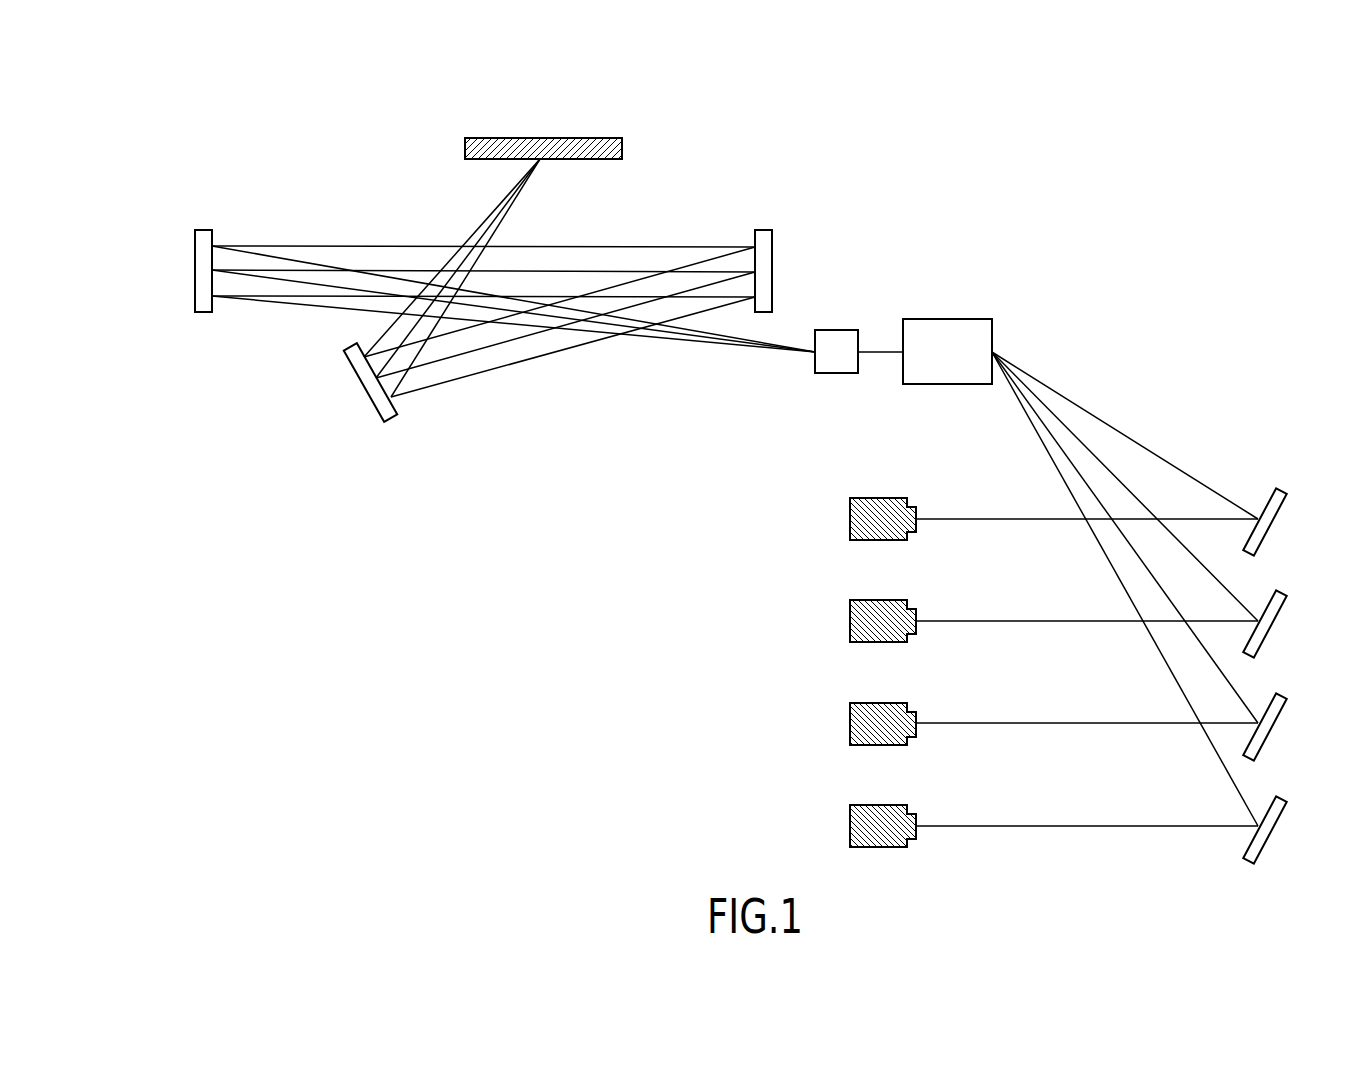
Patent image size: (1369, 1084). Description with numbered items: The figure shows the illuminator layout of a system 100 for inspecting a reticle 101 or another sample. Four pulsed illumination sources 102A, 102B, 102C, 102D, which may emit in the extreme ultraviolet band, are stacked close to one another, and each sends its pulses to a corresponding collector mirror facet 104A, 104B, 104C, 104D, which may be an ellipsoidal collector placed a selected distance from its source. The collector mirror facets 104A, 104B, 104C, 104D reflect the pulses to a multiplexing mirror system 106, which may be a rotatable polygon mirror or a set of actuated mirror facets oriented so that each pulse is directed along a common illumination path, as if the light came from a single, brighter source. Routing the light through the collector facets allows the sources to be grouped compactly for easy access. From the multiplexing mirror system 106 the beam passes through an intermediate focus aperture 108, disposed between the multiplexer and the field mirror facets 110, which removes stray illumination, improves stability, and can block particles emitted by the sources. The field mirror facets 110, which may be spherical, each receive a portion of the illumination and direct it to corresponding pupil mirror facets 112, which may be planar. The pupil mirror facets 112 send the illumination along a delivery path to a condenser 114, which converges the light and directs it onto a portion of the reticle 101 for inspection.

The system 100 is at (215, 118).
The reticle 101 is at (623, 146).
The illumination source 102A is at (850, 512).
The illumination source 102B is at (850, 614).
The illumination source 102C is at (850, 717).
The illumination source 102D is at (850, 819).
The collector mirror facet 104A is at (1272, 530).
The collector mirror facet 104B is at (1272, 632).
The collector mirror facet 104C is at (1272, 735).
The collector mirror facet 104D is at (1272, 838).
The multiplexing mirror system 106 is at (947, 318).
The intermediate focus aperture 108 is at (838, 329).
The field mirror facets 110 is at (203, 229).
The pupil mirror facets 112 is at (762, 229).
The condenser 114 is at (390, 419).